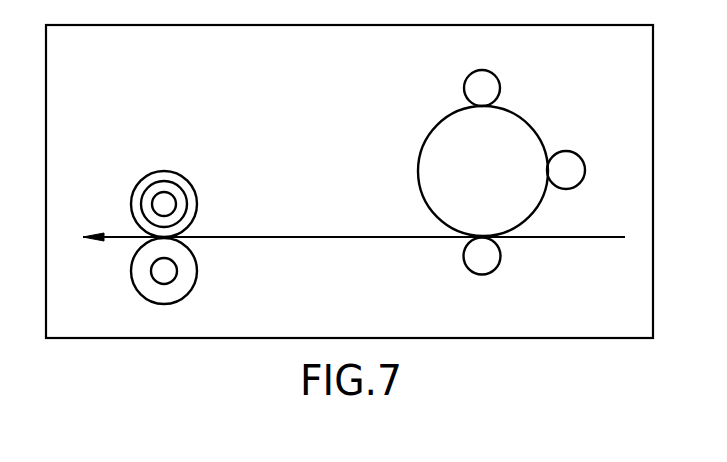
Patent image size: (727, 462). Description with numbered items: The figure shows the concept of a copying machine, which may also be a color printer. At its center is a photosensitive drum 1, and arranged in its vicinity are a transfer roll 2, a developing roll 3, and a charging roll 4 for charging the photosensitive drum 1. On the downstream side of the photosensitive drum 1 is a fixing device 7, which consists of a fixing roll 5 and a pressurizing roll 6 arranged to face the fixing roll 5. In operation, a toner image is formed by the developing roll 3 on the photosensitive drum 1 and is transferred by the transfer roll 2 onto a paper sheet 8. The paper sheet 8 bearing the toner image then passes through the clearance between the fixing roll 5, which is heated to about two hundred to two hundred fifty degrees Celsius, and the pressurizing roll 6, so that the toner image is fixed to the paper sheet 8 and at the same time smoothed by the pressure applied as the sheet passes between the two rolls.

The photosensitive drum 1 is at (435, 147).
The transfer roll 2 is at (475, 263).
The developing roll 3 is at (565, 167).
The charging roll 4 is at (480, 80).
The fixing roll 5 is at (153, 171).
The pressurizing roll 6 is at (197, 270).
The fixing device 7 is at (207, 184).
The paper sheet 8 is at (547, 238).